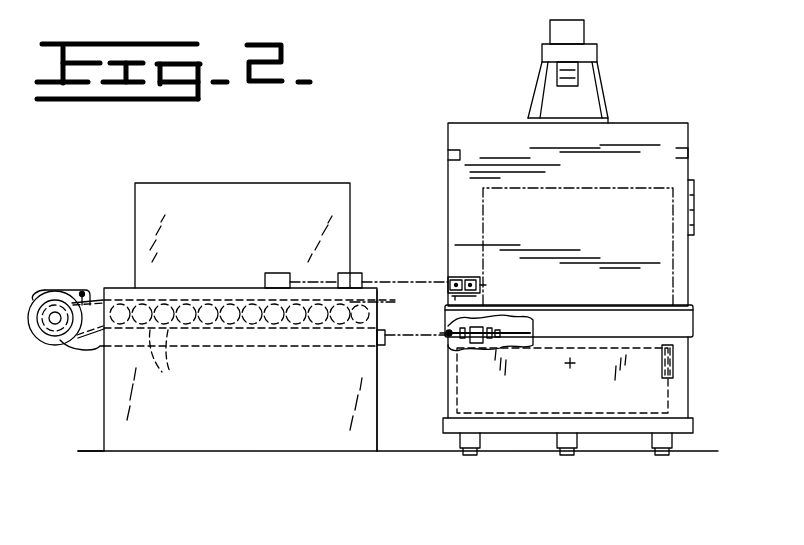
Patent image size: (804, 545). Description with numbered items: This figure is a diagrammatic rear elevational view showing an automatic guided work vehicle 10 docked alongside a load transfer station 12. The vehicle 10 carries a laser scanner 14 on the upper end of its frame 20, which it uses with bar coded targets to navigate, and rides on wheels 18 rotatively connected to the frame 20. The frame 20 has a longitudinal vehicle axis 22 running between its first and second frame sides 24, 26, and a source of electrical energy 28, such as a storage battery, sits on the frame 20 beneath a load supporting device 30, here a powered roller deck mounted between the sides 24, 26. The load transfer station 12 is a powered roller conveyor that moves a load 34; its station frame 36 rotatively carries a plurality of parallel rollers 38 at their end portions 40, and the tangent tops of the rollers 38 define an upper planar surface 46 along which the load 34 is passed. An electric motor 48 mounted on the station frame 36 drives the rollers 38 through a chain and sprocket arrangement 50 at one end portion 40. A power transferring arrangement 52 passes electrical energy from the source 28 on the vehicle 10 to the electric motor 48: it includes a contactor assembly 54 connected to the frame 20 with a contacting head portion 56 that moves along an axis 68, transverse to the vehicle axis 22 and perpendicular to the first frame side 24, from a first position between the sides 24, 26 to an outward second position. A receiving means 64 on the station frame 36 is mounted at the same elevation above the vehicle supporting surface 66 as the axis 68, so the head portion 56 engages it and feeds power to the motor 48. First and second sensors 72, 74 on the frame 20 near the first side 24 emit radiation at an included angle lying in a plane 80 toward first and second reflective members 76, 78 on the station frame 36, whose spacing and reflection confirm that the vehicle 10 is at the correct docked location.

The work vehicle 10 is at (446, 135).
The load transfer station 12 is at (380, 386).
The laser scanner 14 is at (588, 22).
The vehicle wheels 18 is at (565, 445).
The frame 20 is at (558, 398).
The longitudinal vehicle axis 22 is at (572, 366).
The first frame side 24 is at (446, 400).
The second frame side 26 is at (693, 320).
The source of electrical energy 28 is at (675, 365).
The load supporting device 30 is at (672, 300).
The load 34 is at (258, 229).
The station frame 36 is at (254, 428).
The rollers 38 is at (165, 375).
The end portions 40 is at (232, 322).
The upper planar surface 46 is at (405, 279).
The electric motor 48 is at (45, 290).
The chain and sprocket arrangement 50 is at (97, 284).
The power transferring arrangement 52 is at (399, 232).
The contactor assembly 54 is at (520, 312).
The contacting head portion 56 is at (446, 330).
The receiving means 64 is at (368, 352).
The vehicle supporting surface 66 is at (90, 451).
The axis of the contactor assembly 68 is at (528, 334).
The first sensor 72 is at (452, 280).
The second sensor 74 is at (480, 280).
The first reflective member 76 is at (272, 273).
The second reflective member 78 is at (350, 273).
The plane 80 is at (486, 285).